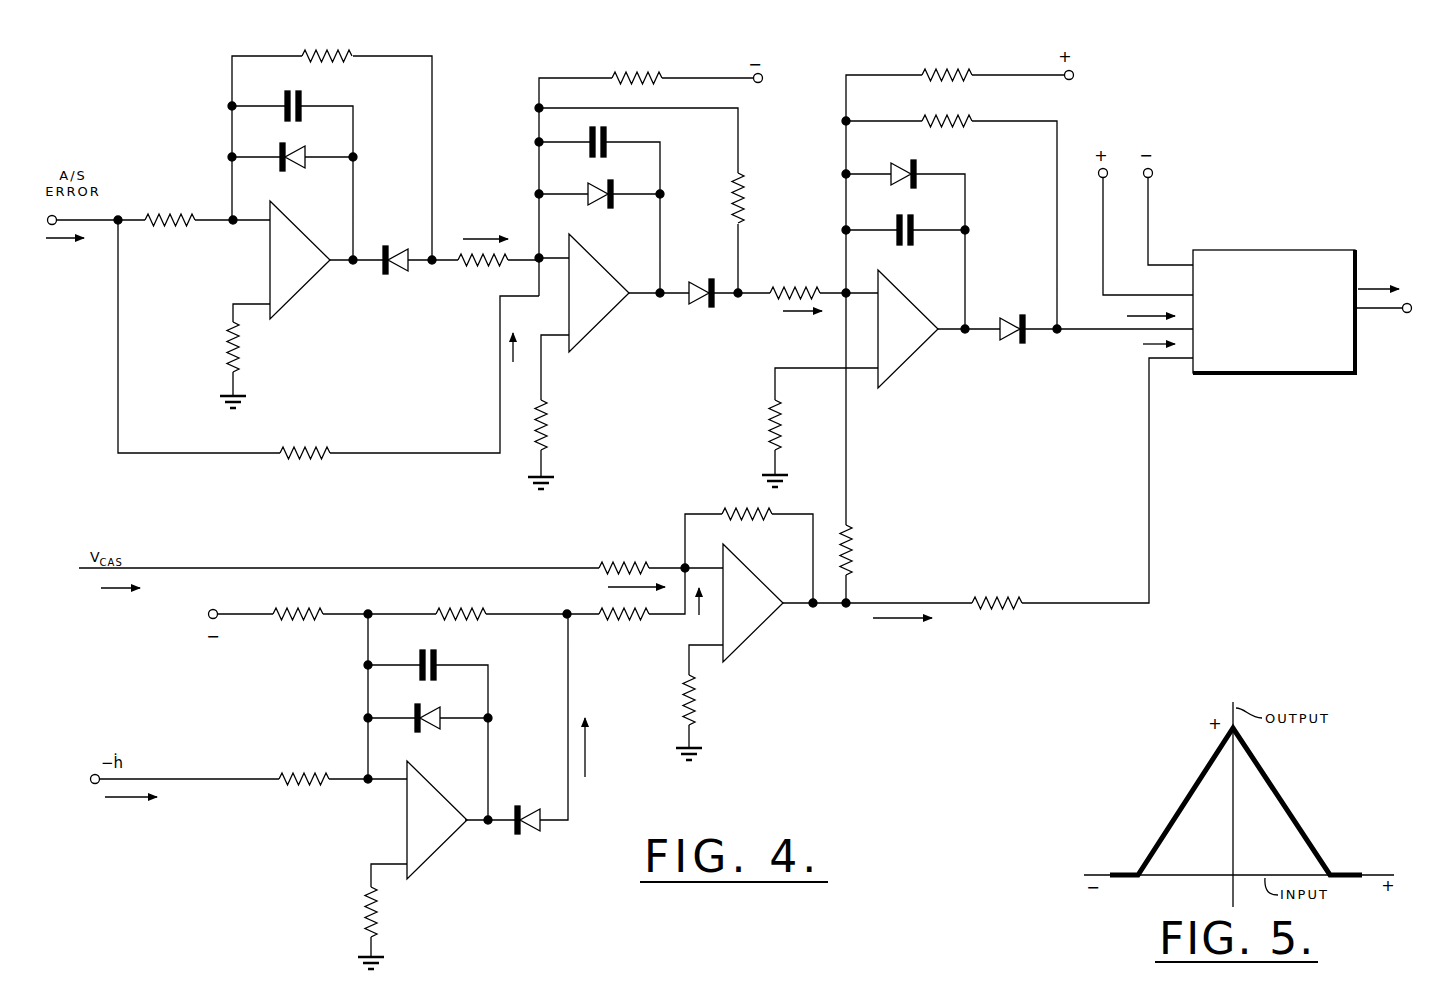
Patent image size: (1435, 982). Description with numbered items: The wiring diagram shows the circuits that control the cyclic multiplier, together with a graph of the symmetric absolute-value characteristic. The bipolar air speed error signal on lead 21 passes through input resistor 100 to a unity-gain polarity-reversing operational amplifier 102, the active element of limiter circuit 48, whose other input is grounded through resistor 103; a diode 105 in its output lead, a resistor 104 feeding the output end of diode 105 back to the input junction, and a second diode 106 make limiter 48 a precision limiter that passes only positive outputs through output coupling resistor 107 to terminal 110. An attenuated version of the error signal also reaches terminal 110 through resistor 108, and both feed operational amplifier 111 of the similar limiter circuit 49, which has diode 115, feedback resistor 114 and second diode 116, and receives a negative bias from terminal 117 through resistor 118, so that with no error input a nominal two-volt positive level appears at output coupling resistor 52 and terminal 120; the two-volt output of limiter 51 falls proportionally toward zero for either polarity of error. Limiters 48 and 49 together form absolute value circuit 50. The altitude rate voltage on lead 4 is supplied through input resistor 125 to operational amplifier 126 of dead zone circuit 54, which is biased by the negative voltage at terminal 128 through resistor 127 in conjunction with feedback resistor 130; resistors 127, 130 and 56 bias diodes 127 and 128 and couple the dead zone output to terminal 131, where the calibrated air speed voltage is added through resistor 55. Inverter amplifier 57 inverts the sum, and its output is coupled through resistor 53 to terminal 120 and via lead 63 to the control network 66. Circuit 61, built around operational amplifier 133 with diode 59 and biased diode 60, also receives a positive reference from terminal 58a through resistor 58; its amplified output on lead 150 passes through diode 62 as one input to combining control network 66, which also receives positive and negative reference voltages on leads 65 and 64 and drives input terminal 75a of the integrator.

The lead 21 is at (108, 228).
The input resistor 100 is at (180, 230).
The operational amplifier 102 is at (318, 283).
The resistor 103 is at (222, 358).
The resistor 104 is at (352, 60).
The diode 105 is at (394, 238).
The second diode 106 is at (290, 165).
The output coupling resistor 107 is at (464, 272).
The resistor 108 is at (320, 458).
The limiter circuit 48 is at (296, 328).
The absolute value circuit 50 is at (497, 79).
The limiter 51 is at (472, 316).
The terminal 110 is at (536, 248).
The operational amplifier 111 is at (614, 300).
The resistor 114 is at (750, 205).
The diode 115 is at (703, 280).
The second diode 116 is at (597, 204).
The terminal 117 is at (765, 77).
The resistor 118 is at (660, 74).
The limiter circuit 49 is at (600, 345).
The resistor 52 is at (776, 302).
The terminal 120 is at (842, 288).
The operational amplifier 133 is at (920, 340).
The resistor 58 is at (966, 72).
The terminal 58a is at (1077, 74).
The diode 59 is at (918, 170).
The biased diode 60 is at (915, 238).
The circuit 61 is at (990, 248).
The diode 62 is at (968, 118).
The lead 64 is at (1152, 242).
The lead 65 is at (1097, 245).
The control network 66 is at (1264, 250).
The input terminal 75a is at (1404, 313).
The lead 150 is at (1112, 333).
The lead 63 is at (1150, 502).
The resistor 53 is at (862, 570).
The amplifier 57 is at (790, 632).
The terminal 131 is at (682, 558).
The resistor 55 is at (605, 562).
The input resistor 56 is at (630, 618).
The feedback resistor 130 is at (485, 610).
The resistor 127 is at (322, 608).
The terminal 128 is at (205, 616).
The input resistor 125 is at (312, 768).
The operational amplifier 126 is at (450, 825).
The dead zone circuit 54 is at (485, 801).
The input lead 4 is at (200, 783).